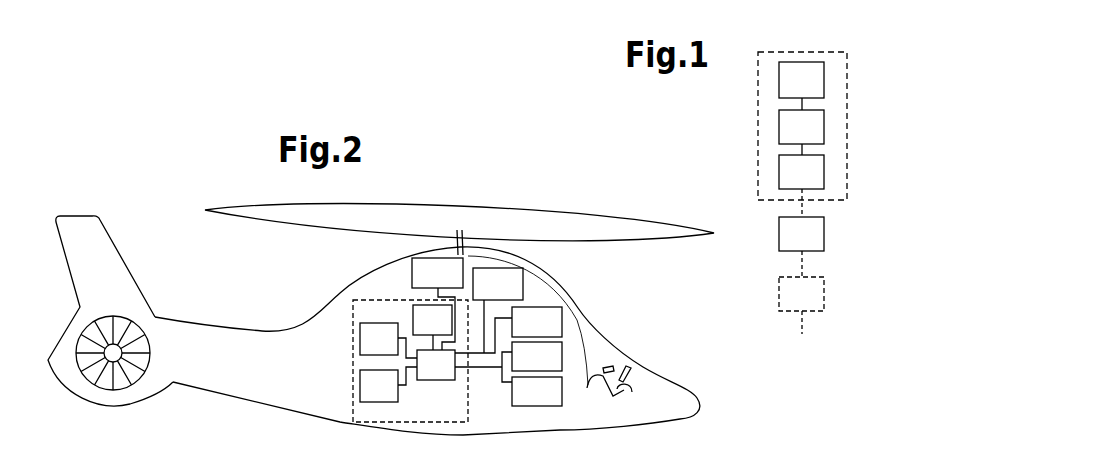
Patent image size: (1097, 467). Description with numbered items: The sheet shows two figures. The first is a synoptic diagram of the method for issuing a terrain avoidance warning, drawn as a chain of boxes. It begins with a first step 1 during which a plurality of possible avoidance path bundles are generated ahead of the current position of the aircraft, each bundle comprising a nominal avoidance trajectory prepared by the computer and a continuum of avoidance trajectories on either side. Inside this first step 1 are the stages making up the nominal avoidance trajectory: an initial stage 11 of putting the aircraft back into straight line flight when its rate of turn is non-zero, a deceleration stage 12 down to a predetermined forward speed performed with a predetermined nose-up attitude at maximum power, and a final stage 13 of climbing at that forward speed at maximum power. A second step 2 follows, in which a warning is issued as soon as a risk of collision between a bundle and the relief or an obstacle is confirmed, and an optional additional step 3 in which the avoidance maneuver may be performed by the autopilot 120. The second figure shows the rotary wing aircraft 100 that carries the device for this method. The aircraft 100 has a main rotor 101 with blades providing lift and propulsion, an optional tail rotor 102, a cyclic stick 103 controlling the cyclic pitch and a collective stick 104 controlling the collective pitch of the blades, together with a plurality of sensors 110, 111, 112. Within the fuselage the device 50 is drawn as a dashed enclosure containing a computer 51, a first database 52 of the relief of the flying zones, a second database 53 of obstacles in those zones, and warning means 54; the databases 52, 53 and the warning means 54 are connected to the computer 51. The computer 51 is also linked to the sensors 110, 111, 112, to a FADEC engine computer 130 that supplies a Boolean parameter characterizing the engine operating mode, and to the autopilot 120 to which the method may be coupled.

In FIG. 1, the first step 1 is at (757, 154).
In FIG. 1, the initial stage 11 is at (815, 90).
In FIG. 1, the deceleration stage 12 is at (815, 137).
In FIG. 1, the final stage 13 is at (815, 182).
In FIG. 1, the second step 2 is at (811, 244).
In FIG. 1, the additional step 3 is at (811, 304).
In FIG. 2, the rotary wing aircraft 100 is at (611, 342).
In FIG. 2, the main rotor 101 is at (508, 224).
In FIG. 2, the tail rotor 102 is at (117, 327).
In FIG. 2, the cyclic stick 103 is at (632, 392).
In FIG. 2, the collective stick 104 is at (587, 388).
In FIG. 2, the device for issuing a terrain avoidance warning 50 is at (345, 360).
In FIG. 2, the computer 51 is at (449, 377).
In FIG. 2, the first database 52 is at (392, 350).
In FIG. 2, the second database 53 is at (392, 397).
In FIG. 2, the warning means 54 is at (446, 332).
In FIG. 2, the sensor 110 is at (556, 334).
In FIG. 2, the sensor 111 is at (556, 368).
In FIG. 2, the sensor 112 is at (556, 403).
In FIG. 2, the autopilot 120 is at (457, 285).
In FIG. 2, the FADEC engine computer 130 is at (517, 295).